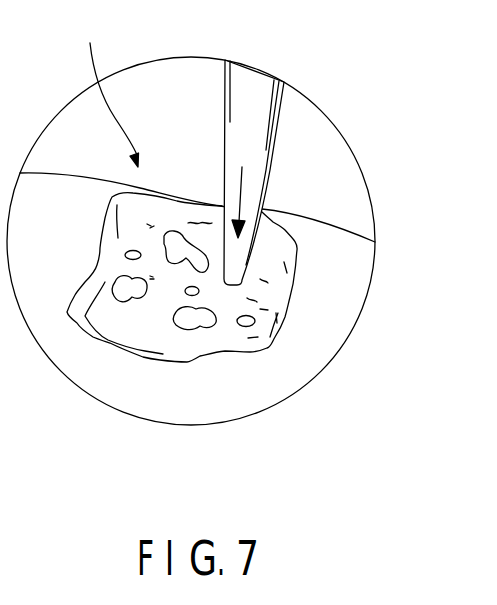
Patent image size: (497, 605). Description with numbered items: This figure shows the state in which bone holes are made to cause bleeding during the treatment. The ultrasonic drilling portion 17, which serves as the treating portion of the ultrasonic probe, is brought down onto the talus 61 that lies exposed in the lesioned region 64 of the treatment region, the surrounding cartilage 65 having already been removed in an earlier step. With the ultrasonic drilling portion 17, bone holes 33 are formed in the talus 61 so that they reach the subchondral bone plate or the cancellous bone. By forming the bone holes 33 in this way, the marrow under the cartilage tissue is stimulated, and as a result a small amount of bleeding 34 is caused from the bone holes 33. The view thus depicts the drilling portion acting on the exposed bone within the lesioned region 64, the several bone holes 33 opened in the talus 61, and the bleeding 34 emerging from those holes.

The ultrasonic drilling portion 17 is at (278, 142).
The bone holes 33 is at (253, 324).
The bleeding 34 is at (176, 242).
The talus 61 is at (217, 340).
The lesioned region 64 is at (108, 92).
The cartilage 65 is at (350, 278).